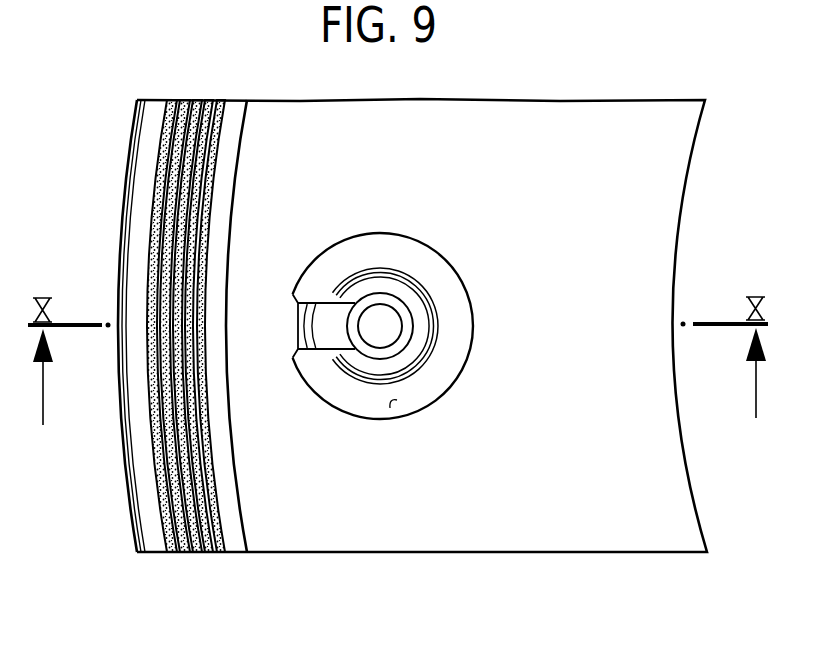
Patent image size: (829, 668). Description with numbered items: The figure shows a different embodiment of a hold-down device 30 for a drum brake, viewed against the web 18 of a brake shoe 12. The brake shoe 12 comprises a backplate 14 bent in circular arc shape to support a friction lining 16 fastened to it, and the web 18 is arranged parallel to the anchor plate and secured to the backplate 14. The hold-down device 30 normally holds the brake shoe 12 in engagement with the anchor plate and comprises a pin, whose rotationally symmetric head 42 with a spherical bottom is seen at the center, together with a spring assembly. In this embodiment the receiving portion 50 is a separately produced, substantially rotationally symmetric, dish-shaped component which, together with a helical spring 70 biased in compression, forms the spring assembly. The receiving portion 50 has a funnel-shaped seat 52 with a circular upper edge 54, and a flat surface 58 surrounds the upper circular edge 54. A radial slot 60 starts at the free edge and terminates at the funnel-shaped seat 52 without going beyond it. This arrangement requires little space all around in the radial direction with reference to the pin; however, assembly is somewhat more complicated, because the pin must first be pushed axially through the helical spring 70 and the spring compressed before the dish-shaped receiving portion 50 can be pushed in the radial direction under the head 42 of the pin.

The brake shoe 12 is at (112, 202).
The backplate 14 is at (228, 487).
The friction lining 16 is at (200, 533).
The web 18 is at (506, 527).
The hold-down device 30 is at (392, 208).
The head 42 is at (388, 336).
The receiving portion 50 is at (442, 247).
The funnel-shaped seat 52 is at (421, 316).
The circular upper edge 54 is at (420, 363).
The flat surface 58 is at (390, 405).
The radial slot 60 is at (333, 337).
The helical spring 70 is at (300, 310).